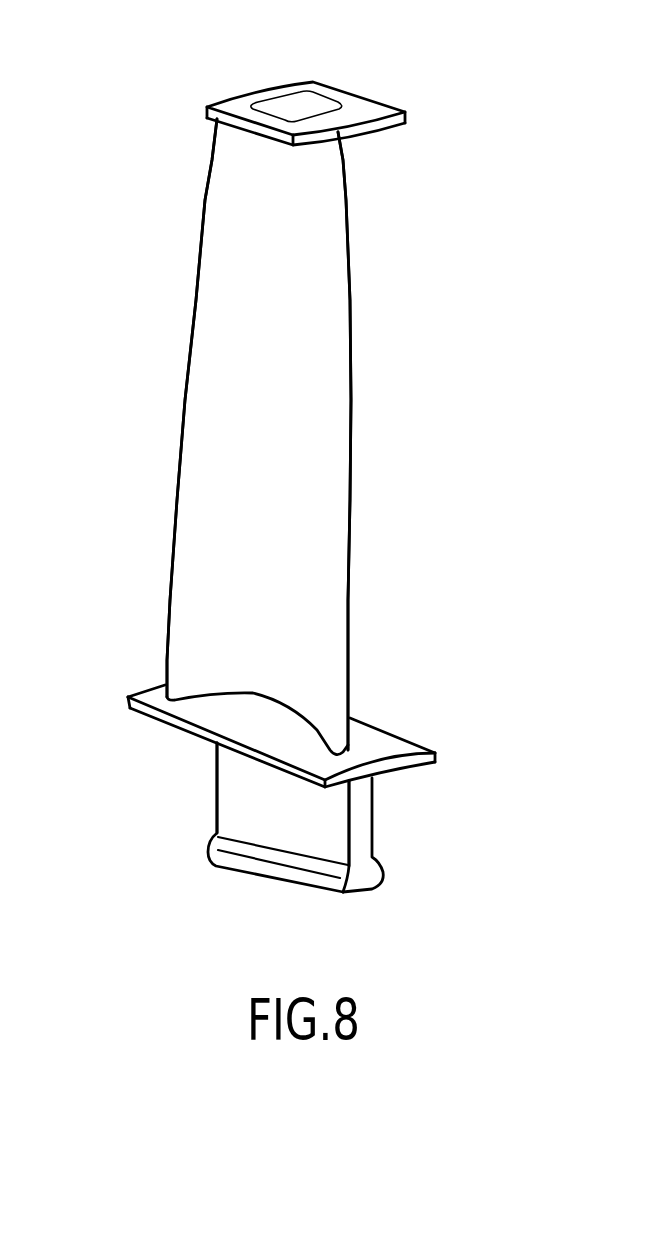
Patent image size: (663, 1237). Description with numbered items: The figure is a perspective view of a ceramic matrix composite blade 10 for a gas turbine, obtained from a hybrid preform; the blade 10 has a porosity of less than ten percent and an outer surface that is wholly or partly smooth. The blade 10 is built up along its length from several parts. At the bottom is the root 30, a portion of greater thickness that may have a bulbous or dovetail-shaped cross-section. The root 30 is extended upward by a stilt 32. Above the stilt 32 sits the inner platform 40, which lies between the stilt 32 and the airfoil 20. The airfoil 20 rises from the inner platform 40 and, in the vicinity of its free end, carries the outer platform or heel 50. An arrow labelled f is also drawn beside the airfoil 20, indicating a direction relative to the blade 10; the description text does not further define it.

The CMC blade 10 is at (148, 435).
The airfoil 20 is at (338, 417).
The root 30 is at (396, 876).
The stilt 32 is at (247, 805).
The inner platform 40 is at (378, 747).
The outer platform or heel 50 is at (193, 60).
The gas flow direction f is at (120, 558).